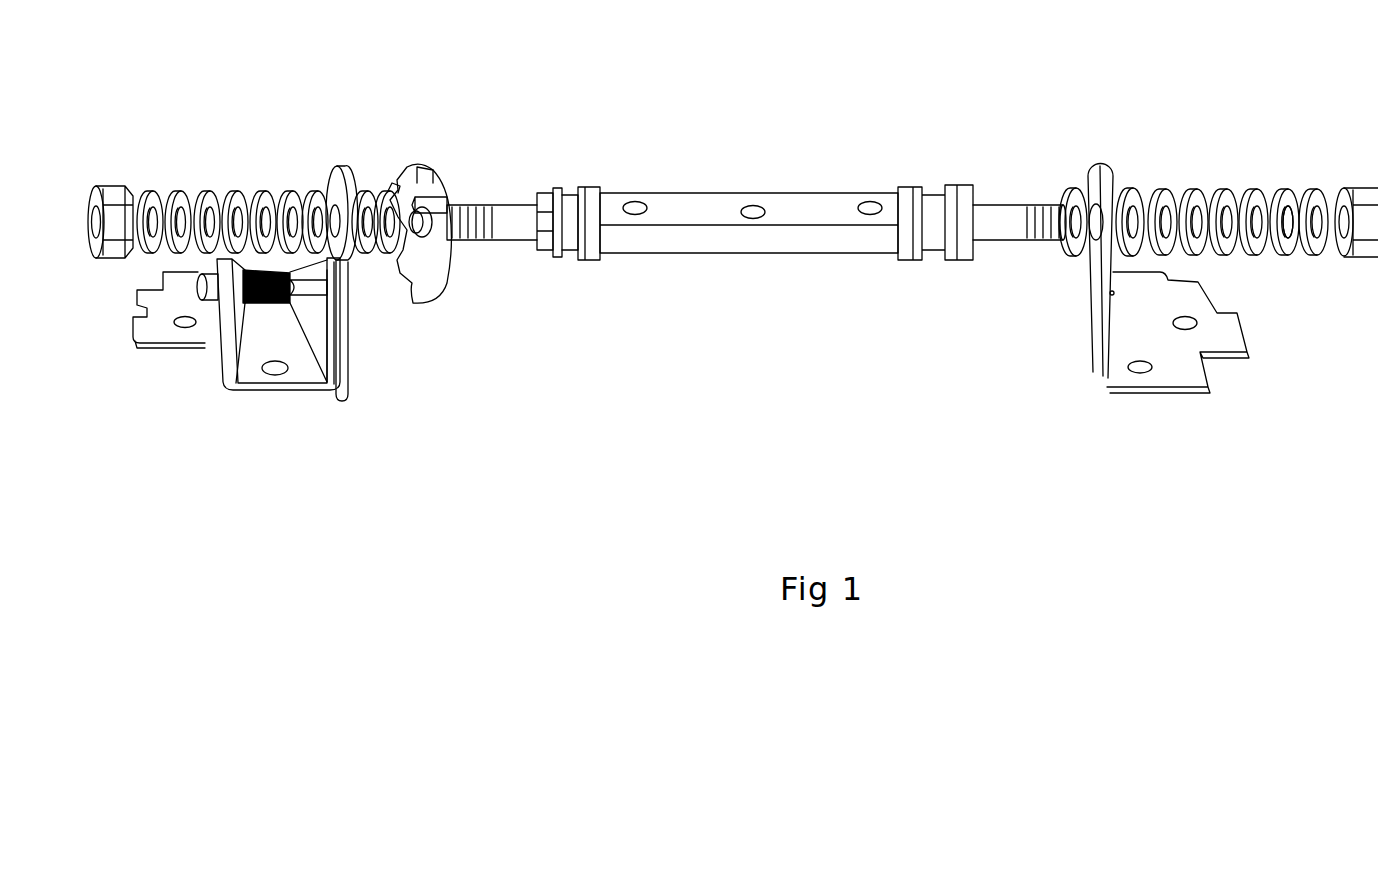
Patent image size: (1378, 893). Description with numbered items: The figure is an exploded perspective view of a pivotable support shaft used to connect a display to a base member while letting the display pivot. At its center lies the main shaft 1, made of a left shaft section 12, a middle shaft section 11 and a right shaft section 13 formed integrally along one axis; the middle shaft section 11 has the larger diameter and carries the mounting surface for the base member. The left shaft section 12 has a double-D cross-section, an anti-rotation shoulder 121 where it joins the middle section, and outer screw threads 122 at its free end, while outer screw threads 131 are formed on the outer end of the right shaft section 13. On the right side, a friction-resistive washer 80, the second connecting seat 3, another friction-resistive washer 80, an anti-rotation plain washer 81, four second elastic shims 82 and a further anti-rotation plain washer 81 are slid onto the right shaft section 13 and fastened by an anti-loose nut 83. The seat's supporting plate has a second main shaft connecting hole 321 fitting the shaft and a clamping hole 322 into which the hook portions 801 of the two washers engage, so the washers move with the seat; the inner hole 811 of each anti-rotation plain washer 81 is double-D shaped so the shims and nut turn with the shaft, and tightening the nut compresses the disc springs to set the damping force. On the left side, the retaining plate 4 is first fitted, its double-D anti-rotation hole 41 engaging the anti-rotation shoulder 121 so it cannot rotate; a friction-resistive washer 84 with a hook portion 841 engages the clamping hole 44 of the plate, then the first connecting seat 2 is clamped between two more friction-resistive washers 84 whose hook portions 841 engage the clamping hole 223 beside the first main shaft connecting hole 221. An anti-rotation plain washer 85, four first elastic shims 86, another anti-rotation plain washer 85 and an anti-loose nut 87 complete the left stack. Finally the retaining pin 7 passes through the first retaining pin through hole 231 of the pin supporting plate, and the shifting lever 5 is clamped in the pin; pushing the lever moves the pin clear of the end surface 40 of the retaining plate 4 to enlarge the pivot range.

The main shaft 1 is at (756, 221).
The middle shaft section 11 is at (818, 205).
The left shaft section 12 is at (527, 232).
The anti-rotation shoulder 121 is at (566, 187).
The outer screw threads 122 is at (543, 183).
The right shaft section 13 is at (1003, 245).
The outer screw threads 131 is at (1037, 243).
The first connecting seat 2 is at (249, 375).
The first main shaft connecting hole 221 is at (300, 292).
The clamping hole 223 is at (325, 300).
The first retaining pin through hole 231 is at (222, 310).
The second connecting seat 3 is at (1131, 237).
The second main shaft connecting hole 321 is at (1092, 165).
The clamping hole 322 is at (1086, 262).
The retaining plate 4 is at (446, 277).
The end surface 40 is at (432, 240).
The anti-rotation hole 41 is at (440, 257).
The clamping hole 44 is at (427, 176).
The shifting lever 5 is at (340, 362).
The retaining pin 7 is at (197, 290).
The friction-resistive washer 80 is at (1070, 189).
The hook portion 801 is at (1150, 370).
The anti-rotation plain washer 81 is at (1166, 189).
The inner hole 811 is at (1289, 255).
The second elastic shims 82 is at (1195, 189).
The anti-loose nut 83 is at (1357, 192).
The friction-resistive washer 84 is at (318, 188).
The hook portion 841 is at (392, 185).
The anti-rotation plain washer 85 is at (148, 189).
The first elastic shims 86 is at (178, 190).
The anti-loose nut 87 is at (105, 188).